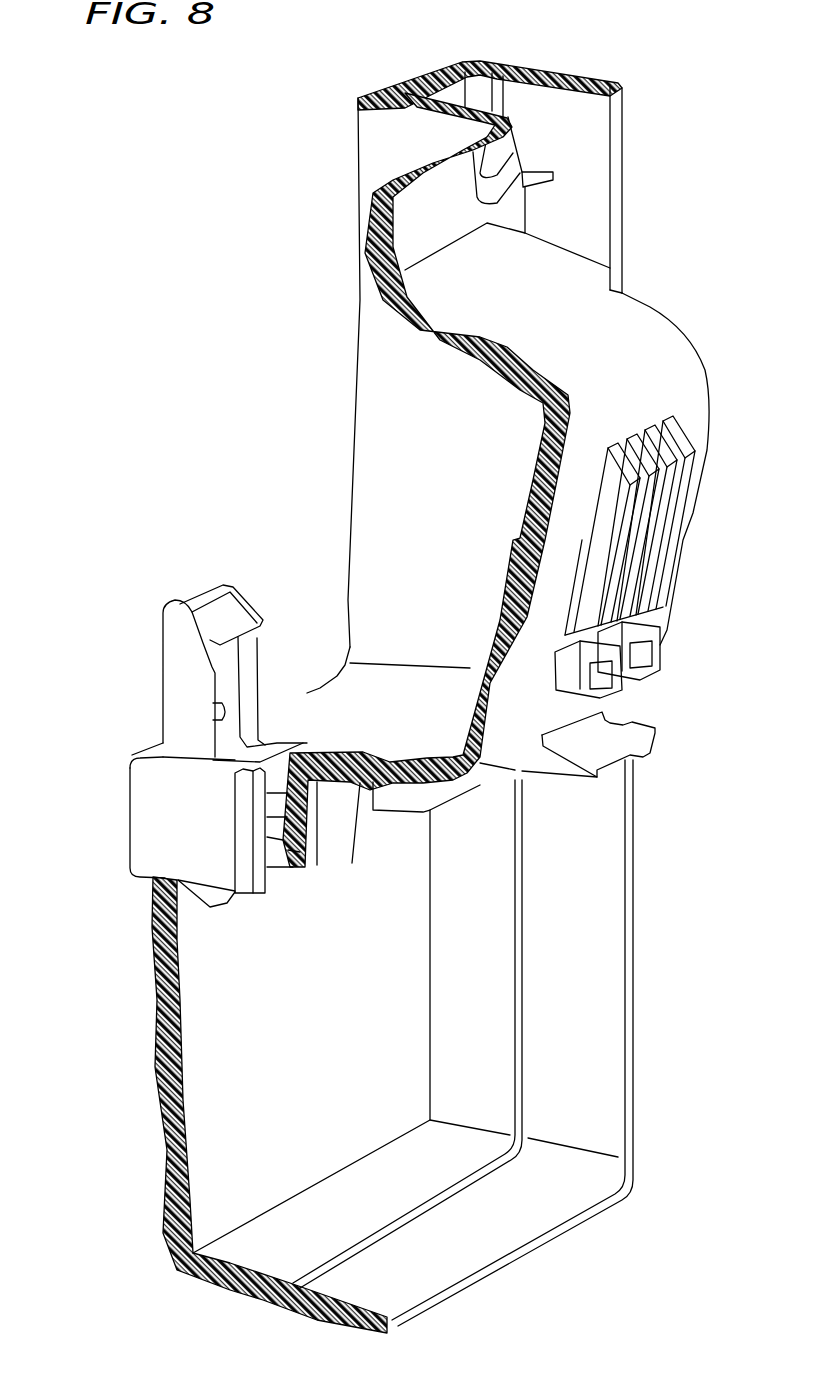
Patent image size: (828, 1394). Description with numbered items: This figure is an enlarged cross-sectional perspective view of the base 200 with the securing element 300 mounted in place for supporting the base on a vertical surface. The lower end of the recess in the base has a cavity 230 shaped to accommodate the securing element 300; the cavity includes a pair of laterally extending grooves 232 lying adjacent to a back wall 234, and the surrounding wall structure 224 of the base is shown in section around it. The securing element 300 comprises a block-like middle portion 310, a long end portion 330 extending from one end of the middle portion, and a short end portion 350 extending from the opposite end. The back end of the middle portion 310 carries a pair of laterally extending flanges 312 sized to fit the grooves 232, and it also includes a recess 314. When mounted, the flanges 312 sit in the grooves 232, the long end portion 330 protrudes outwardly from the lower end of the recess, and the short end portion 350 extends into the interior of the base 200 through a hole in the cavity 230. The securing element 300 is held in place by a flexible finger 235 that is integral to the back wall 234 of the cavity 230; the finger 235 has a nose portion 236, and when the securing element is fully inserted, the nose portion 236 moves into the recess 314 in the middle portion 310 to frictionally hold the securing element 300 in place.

The base 200 is at (650, 853).
The upper housing 224 is at (400, 403).
The cavity 230 is at (280, 737).
The grooves 232 is at (288, 752).
The back wall 234 is at (288, 812).
The flexible finger 235 is at (297, 867).
The nose portion 236 is at (290, 850).
The securing element 300 is at (118, 783).
The middle portion 310 is at (150, 837).
The flanges 312 is at (155, 898).
The recess 314 is at (290, 873).
The long end portion 330 is at (177, 640).
The short end portion 350 is at (222, 900).